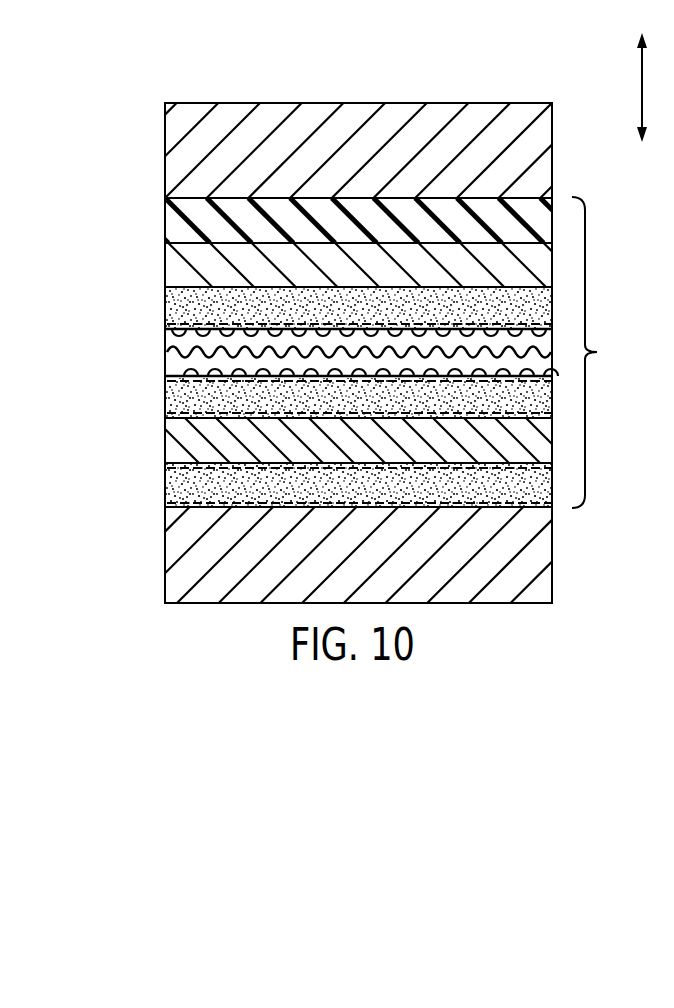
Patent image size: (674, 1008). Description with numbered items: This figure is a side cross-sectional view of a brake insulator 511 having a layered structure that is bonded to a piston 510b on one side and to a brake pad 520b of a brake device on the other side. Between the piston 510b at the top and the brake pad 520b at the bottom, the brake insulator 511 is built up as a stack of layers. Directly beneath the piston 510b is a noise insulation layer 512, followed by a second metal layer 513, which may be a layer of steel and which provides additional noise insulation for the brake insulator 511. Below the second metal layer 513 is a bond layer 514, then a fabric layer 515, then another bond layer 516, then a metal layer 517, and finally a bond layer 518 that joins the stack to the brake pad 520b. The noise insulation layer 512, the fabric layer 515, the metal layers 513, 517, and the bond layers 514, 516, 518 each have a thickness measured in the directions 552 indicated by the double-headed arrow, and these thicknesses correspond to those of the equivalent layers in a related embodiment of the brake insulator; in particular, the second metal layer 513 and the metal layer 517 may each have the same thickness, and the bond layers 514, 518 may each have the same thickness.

The piston 510b is at (178, 160).
The brake insulator 511 is at (374, 352).
The noise insulation layer 512 is at (178, 228).
The second metal layer 513 is at (178, 268).
The bond layer 514 is at (178, 312).
The fabric layer 515 is at (178, 358).
The bond layer 516 is at (178, 400).
The metal layer 517 is at (178, 444).
The bond layer 518 is at (178, 490).
The brake pad 520b is at (178, 565).
The directions 552 is at (641, 83).